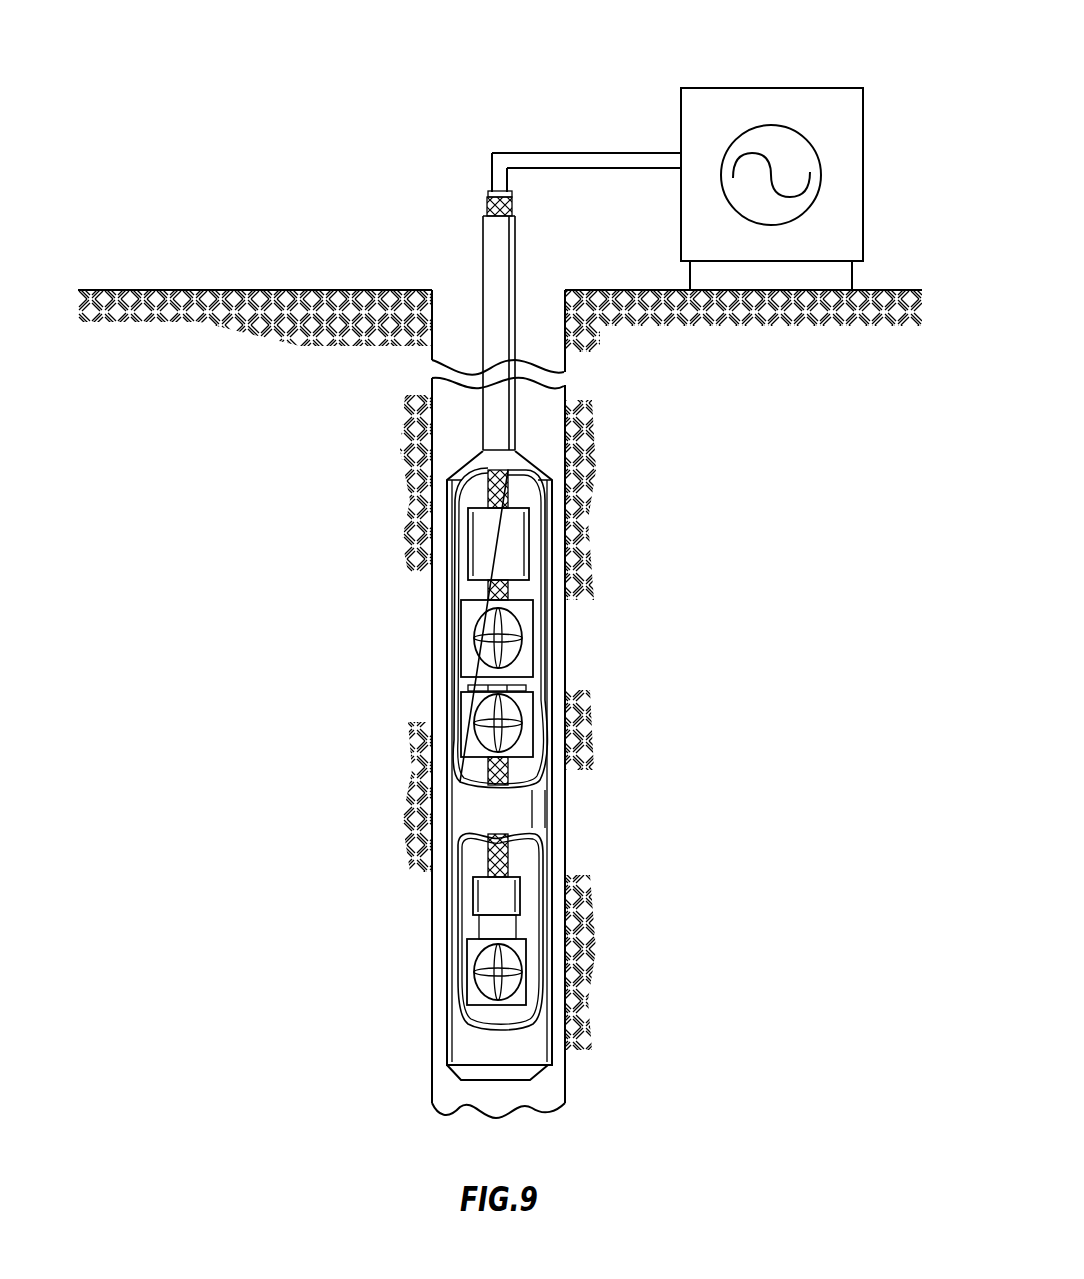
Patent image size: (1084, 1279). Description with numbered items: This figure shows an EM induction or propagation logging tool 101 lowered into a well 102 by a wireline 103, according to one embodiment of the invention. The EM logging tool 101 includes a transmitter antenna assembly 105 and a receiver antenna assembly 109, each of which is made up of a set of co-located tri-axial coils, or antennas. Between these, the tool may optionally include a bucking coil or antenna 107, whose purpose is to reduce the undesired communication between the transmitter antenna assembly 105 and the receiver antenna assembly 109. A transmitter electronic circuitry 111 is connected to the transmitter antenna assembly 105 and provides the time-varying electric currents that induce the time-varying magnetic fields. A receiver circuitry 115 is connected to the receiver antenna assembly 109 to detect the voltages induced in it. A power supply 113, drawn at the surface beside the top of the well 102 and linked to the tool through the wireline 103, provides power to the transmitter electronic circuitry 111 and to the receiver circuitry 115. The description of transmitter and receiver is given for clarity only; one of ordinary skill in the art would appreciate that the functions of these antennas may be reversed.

The EM logging tool 101 is at (482, 804).
The well 102 is at (463, 328).
The wireline 103 is at (516, 262).
The transmitter antenna assembly 105 is at (528, 652).
The bucking coil 107 is at (528, 723).
The receiver antenna assembly 109 is at (527, 968).
The transmitter electronic circuitry 111 is at (517, 543).
The power supply 113 is at (777, 126).
The receiver circuitry 115 is at (483, 897).